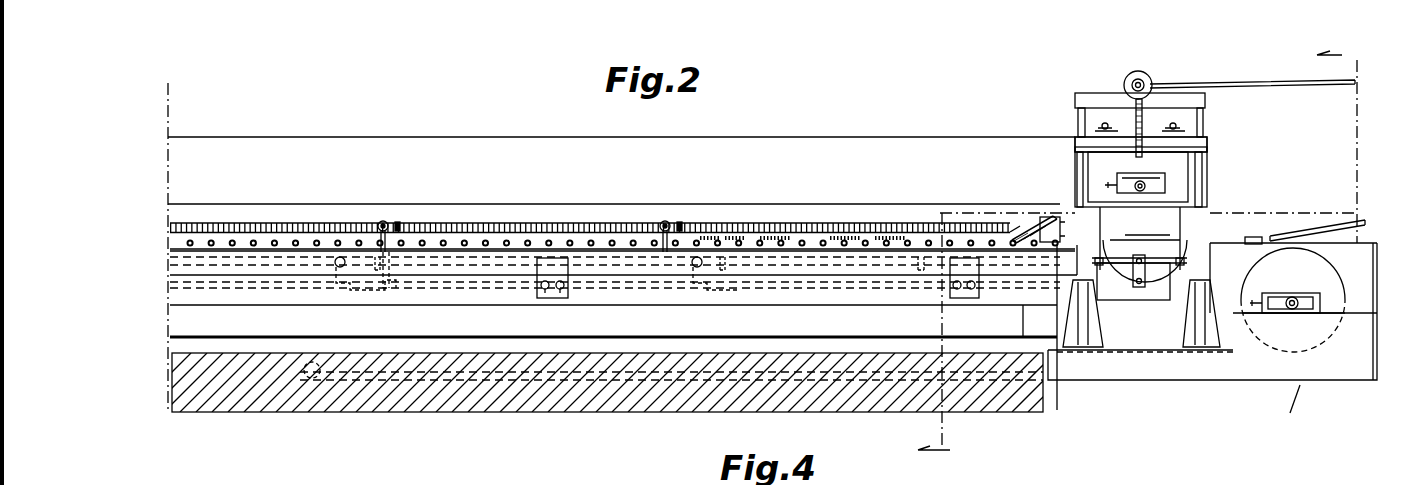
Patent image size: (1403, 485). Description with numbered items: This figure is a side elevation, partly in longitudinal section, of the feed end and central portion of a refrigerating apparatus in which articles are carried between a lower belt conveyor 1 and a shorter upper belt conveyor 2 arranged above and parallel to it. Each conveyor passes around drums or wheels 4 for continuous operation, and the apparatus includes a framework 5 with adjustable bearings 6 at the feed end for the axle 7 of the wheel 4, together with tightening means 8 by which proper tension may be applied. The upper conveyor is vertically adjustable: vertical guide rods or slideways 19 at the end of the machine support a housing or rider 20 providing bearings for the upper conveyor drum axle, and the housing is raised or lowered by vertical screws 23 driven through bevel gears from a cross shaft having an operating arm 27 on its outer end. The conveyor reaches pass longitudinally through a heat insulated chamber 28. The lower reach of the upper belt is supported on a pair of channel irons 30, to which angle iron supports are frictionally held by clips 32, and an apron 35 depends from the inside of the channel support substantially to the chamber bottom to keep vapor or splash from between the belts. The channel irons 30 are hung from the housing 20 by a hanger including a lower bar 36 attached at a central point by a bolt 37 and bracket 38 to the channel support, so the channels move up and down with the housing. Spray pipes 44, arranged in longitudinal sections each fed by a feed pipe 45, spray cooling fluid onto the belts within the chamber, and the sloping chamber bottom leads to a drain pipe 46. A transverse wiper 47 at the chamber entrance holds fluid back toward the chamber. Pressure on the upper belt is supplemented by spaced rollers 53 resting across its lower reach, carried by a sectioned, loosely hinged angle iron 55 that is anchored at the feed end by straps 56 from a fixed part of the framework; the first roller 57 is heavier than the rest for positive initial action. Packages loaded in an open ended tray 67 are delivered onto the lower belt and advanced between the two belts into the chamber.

The lower belt conveyor 1 is at (1252, 252).
The upper belt conveyor 2 is at (1115, 242).
The drums or wheels 4 is at (1293, 300).
The framework 5 is at (1138, 253).
The adjustable bearings 6 is at (1305, 306).
The axle 7 is at (1293, 309).
The tightening means 8 is at (1255, 306).
The vertical guide rods or slideways 19 is at (1078, 118).
The housings or riders 20 is at (1208, 146).
The vertical screws 23 is at (1138, 115).
The operating arm 27 is at (1246, 86).
The chamber 28 is at (636, 212).
The channel irons 30 is at (835, 297).
The clips 32 is at (540, 276).
The apron 35 is at (1024, 333).
The lower bar 36 is at (1120, 264).
The bolt 37 is at (1134, 276).
The bracket 38 is at (1145, 280).
The spray pipes 44 is at (512, 230).
The feed pipe 45 is at (388, 223).
The drain pipe 46 is at (530, 382).
The transverse wiper 47 is at (1046, 222).
The spaced rollers 53 is at (302, 240).
The angle iron 55 is at (812, 240).
The straps 56 is at (1020, 232).
The first roller 57 is at (1008, 232).
The open ended tray 67 is at (1332, 220).